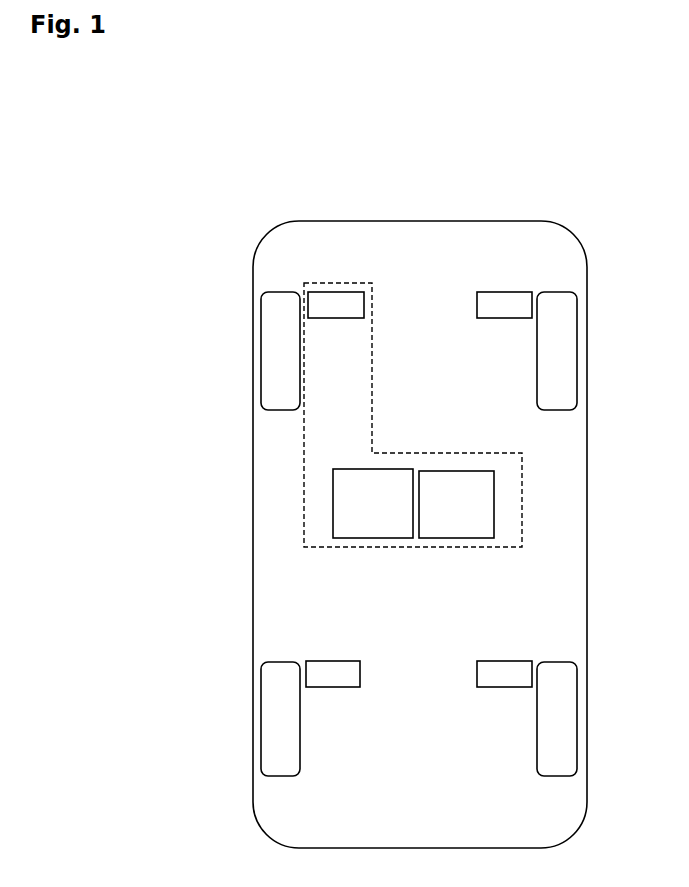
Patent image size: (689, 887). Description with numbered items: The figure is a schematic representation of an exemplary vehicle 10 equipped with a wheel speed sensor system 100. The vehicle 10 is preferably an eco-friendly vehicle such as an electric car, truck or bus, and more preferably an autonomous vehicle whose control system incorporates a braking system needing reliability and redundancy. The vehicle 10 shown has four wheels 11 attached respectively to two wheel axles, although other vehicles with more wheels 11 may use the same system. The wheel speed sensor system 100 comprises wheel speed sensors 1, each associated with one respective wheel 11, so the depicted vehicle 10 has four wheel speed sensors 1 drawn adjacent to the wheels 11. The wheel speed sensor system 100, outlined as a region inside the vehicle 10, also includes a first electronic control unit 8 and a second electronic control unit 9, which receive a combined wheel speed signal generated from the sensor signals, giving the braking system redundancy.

The wheel speed sensor 1 is at (419, 489).
The first electronic control unit 8 is at (365, 542).
The second electronic control unit 9 is at (445, 542).
The vehicle 10 is at (473, 220).
The wheel 11 is at (419, 534).
The wheel speed sensor system 100 is at (393, 452).